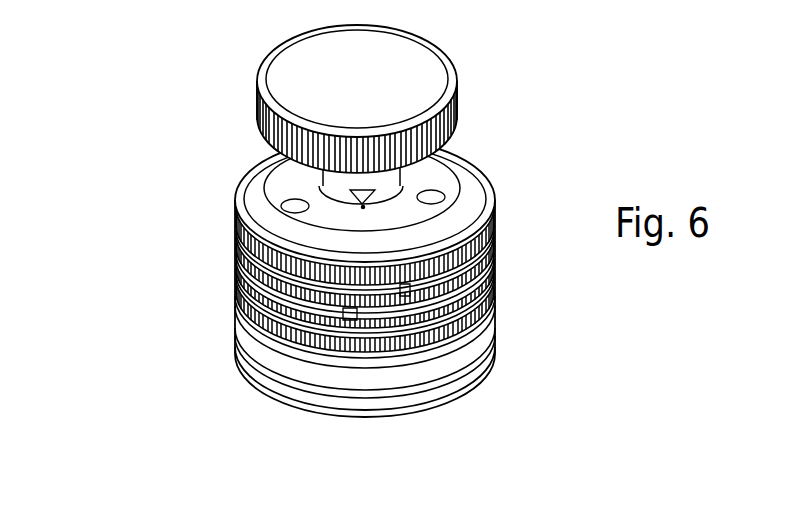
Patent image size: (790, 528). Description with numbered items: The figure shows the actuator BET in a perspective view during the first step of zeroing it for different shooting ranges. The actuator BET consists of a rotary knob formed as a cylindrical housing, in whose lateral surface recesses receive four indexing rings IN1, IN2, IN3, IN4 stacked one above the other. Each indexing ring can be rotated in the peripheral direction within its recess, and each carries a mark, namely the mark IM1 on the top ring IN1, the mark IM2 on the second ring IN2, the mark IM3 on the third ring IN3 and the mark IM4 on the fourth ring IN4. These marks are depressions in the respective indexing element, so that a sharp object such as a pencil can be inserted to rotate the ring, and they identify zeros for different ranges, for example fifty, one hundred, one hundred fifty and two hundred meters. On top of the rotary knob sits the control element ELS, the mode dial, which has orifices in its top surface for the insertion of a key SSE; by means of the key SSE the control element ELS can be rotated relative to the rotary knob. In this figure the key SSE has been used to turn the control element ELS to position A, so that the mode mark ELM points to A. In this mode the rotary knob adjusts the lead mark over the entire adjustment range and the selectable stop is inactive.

The actuator BET is at (165, 132).
The key SSE is at (398, 73).
The mode mark ELM is at (345, 196).
The control element ELS is at (340, 197).
The first indexing ring IN1 is at (492, 273).
The mark of the first indexing ring IM1 is at (480, 312).
The second indexing ring IN2 is at (425, 292).
The mark of the second indexing ring IM2 is at (370, 327).
The third indexing ring IN3 is at (408, 328).
The mark of the third indexing ring IM3 is at (303, 327).
The fourth indexing ring IN4 is at (365, 357).
The mark of the fourth indexing ring IM4 is at (267, 333).